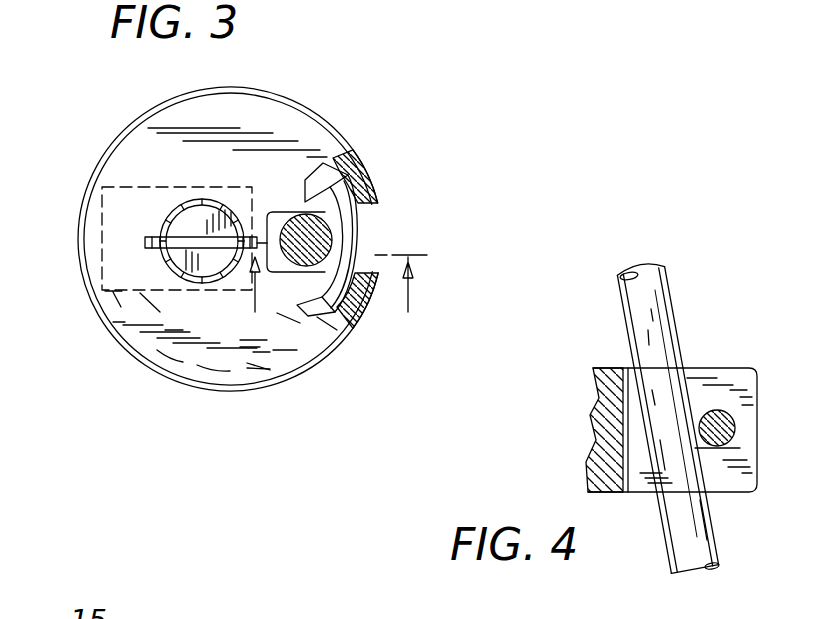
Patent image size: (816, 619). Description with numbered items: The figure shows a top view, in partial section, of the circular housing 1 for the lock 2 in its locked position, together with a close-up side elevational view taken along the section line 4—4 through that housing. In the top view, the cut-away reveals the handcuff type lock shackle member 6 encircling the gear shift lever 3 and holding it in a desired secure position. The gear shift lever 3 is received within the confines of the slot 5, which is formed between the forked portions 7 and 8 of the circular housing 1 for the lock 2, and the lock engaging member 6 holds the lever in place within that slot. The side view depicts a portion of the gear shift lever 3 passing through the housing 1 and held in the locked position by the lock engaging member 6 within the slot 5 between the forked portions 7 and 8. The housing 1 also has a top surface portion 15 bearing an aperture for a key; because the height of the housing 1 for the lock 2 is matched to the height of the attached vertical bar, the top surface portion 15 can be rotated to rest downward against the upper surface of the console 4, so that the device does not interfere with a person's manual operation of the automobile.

In FIG. 3, the housing 1 is at (268, 110).
In FIG. 4, the housing 1 is at (600, 366).
In FIG. 3, the lock 2 is at (188, 235).
In FIG. 3, the gear shift lever 3 is at (305, 212).
In FIG. 4, the gear shift lever 3 is at (660, 293).
In FIG. 3, the console 4 is at (333, 302).
In FIG. 3, the slot 5 is at (286, 276).
In FIG. 3, the lock shackle member 6 is at (360, 237).
In FIG. 4, the lock shackle member 6 is at (736, 450).
In FIG. 3, the forked portion 7 is at (372, 306).
In FIG. 3, the forked portion 8 is at (370, 183).
In FIG. 4, the forked portion 8 is at (737, 373).
In FIG. 3, the top surface portion 15 is at (178, 125).